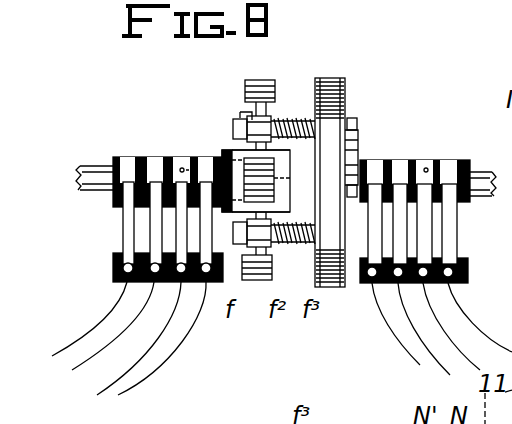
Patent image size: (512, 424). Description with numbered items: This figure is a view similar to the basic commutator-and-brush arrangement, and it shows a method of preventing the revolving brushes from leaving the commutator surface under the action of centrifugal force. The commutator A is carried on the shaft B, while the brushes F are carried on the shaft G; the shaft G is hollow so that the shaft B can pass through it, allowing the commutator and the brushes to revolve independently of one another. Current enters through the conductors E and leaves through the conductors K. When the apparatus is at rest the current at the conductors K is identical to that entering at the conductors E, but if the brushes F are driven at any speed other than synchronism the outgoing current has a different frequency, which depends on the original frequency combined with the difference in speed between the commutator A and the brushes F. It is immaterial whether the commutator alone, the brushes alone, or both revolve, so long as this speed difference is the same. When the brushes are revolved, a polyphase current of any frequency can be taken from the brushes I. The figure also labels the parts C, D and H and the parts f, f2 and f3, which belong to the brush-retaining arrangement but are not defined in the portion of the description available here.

The commutator A is at (228, 172).
The shaft B is at (92, 167).
The left frame columns C is at (208, 157).
The left lower rods D is at (180, 230).
The conductors E is at (182, 340).
The brushes F is at (252, 120).
The worm shaft f is at (276, 118).
The bearing blocks f2 is at (262, 86).
The worm wheel f3 is at (300, 118).
The shaft G is at (484, 182).
The right frame columns H is at (448, 160).
The brushes I is at (405, 238).
The conductors K is at (446, 336).